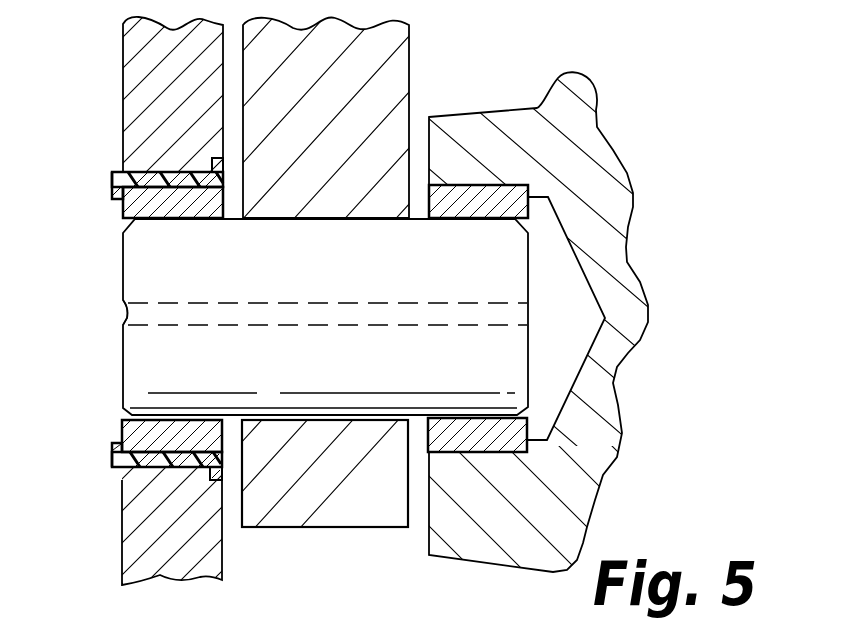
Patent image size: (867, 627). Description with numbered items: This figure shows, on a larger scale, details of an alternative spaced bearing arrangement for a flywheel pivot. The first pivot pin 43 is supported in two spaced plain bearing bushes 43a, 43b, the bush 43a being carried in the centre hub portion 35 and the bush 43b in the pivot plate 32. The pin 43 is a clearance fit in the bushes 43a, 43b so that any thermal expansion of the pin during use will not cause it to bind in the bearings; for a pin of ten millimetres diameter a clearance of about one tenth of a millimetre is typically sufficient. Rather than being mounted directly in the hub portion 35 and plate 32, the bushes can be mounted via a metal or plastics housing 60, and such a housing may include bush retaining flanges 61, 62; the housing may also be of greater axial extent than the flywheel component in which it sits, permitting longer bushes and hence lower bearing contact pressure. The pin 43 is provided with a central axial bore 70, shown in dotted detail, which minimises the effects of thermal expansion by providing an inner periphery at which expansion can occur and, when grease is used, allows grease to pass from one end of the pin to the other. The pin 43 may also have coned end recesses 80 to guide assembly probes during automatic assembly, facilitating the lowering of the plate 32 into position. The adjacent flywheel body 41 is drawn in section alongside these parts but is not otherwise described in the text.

The pivot plate 32 is at (150, 513).
The bearing housing part 41 is at (325, 68).
The centre hub portion 35 is at (601, 191).
The first pivot pin 43 is at (274, 268).
The plain bearing bush 43a is at (515, 453).
The plain bearing bush 43b is at (152, 440).
The housing 60 is at (167, 178).
The bush retaining flange 61 is at (112, 180).
The bush retaining flange 62 is at (215, 165).
The central axial bore 70 is at (450, 300).
The coned end recess 80 is at (127, 312).